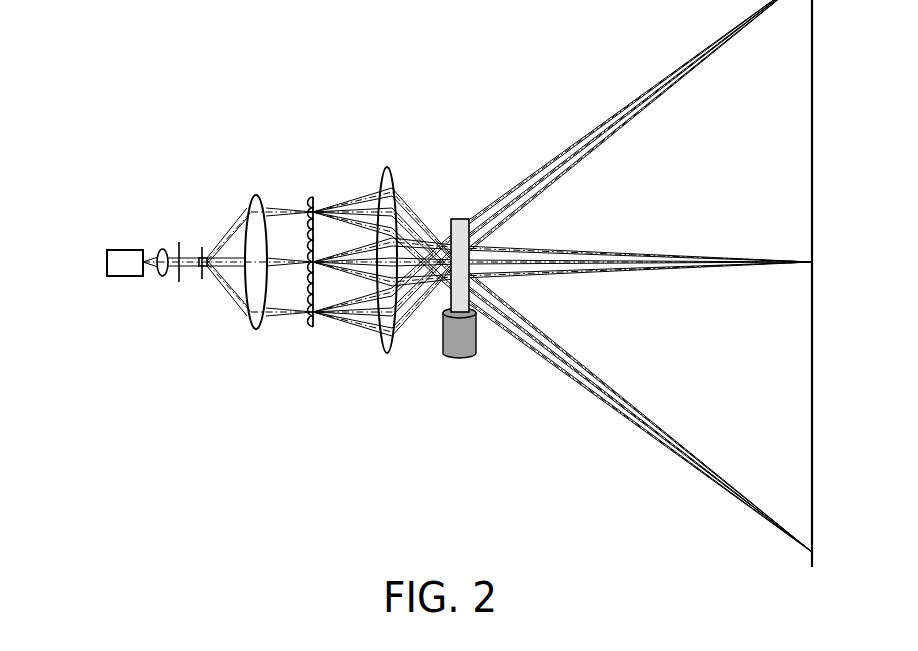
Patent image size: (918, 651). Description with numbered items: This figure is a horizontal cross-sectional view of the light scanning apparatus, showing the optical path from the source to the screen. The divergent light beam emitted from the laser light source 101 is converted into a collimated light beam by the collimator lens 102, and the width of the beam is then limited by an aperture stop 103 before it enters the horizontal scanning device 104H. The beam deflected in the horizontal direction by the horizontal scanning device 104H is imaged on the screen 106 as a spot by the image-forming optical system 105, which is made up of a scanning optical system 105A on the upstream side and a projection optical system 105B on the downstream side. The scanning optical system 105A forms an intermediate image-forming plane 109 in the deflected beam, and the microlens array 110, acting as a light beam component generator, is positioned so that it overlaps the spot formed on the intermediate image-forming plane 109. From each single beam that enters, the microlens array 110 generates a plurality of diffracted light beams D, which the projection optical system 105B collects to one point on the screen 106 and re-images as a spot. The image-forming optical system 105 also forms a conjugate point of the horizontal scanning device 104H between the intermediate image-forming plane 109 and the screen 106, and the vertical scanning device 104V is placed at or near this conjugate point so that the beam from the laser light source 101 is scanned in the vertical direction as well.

The laser light source 101 is at (123, 278).
The collimator lens 102 is at (162, 282).
The aperture stop 103 is at (177, 292).
The horizontal scanning device 104H is at (200, 243).
The vertical scanning device 104V is at (460, 208).
The image-forming optical system 105 is at (331, 343).
The scanning optical system 105A is at (257, 341).
The projection optical system 105B is at (401, 306).
The screen 106 is at (810, 193).
The intermediate image-forming plane 109 is at (313, 190).
The microlens array 110 is at (302, 200).
The diffracted light beam D is at (354, 193).